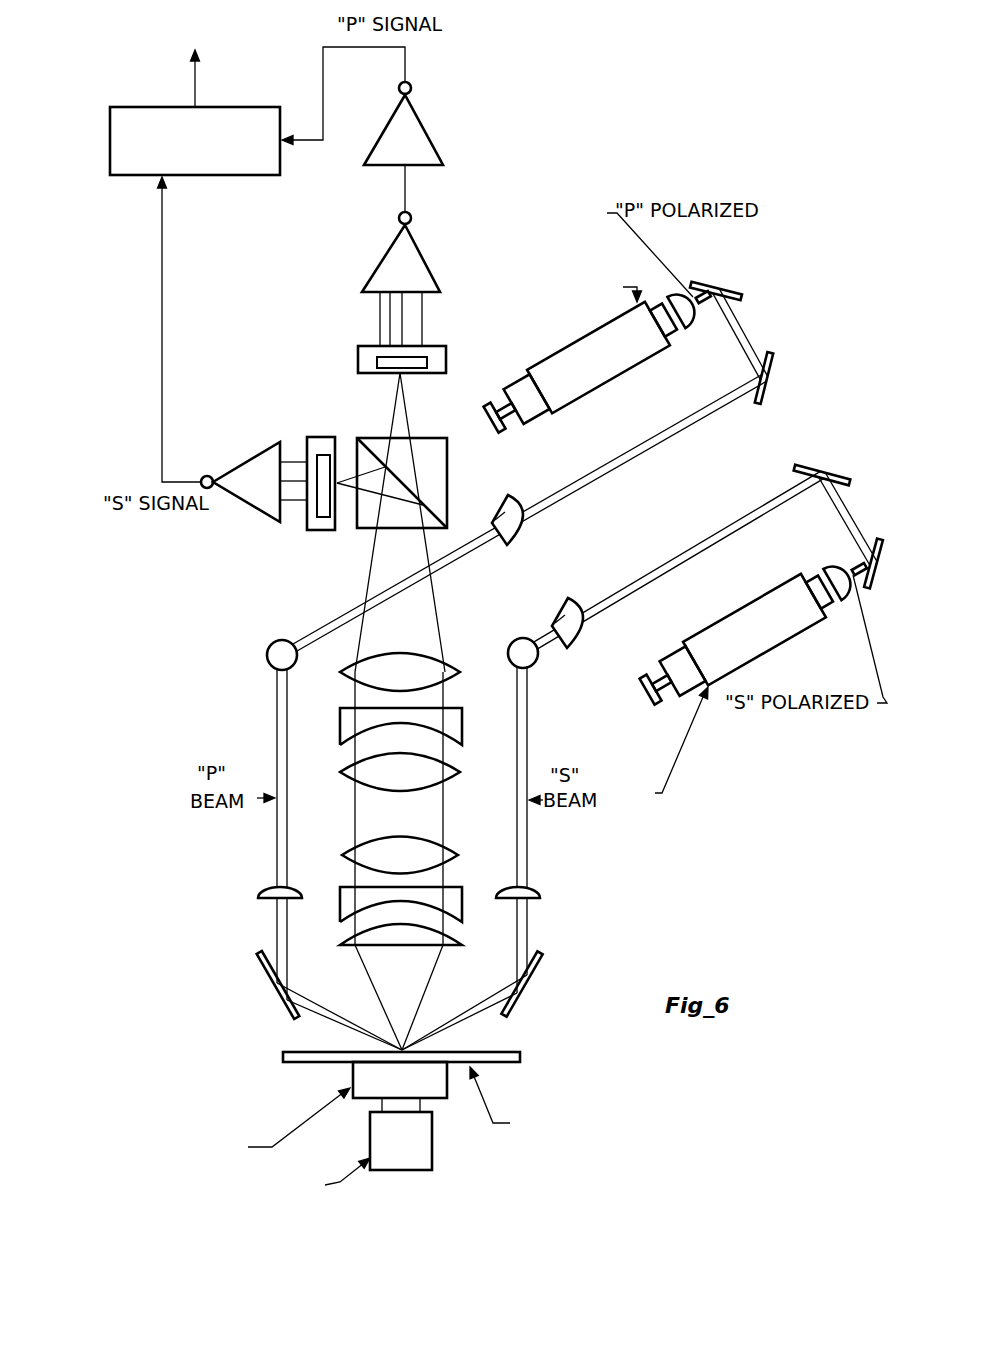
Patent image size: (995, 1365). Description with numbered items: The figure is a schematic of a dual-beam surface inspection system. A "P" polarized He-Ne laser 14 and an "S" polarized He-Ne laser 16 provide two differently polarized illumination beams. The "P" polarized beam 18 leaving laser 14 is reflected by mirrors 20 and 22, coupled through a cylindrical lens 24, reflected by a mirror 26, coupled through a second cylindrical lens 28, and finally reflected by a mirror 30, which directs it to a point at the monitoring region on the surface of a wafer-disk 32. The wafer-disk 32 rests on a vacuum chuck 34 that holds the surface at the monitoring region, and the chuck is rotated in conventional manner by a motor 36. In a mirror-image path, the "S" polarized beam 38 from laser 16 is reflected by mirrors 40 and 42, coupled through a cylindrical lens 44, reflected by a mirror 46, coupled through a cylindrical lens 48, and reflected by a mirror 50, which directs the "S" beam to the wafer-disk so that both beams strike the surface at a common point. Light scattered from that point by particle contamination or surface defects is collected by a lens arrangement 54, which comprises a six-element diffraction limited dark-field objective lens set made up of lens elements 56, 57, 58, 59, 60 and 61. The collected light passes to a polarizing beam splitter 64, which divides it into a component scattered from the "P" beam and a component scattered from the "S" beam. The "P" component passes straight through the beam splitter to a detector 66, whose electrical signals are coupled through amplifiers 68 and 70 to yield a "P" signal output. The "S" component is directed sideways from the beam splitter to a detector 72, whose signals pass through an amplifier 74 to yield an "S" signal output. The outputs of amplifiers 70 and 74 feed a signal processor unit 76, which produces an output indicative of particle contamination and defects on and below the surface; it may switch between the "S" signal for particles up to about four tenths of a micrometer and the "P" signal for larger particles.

The "P" polarized He-Ne laser 14 is at (628, 372).
The "S" polarized He-Ne laser 16 is at (740, 614).
The "P" polarized beam 18 is at (706, 310).
The mirror 20 is at (745, 292).
The mirror 22 is at (772, 380).
The cylindrical lens 24 is at (518, 528).
The mirror 26 is at (268, 655).
The cylindrical lens 28 is at (258, 896).
The mirror 30 is at (260, 968).
The wafer-disk 32 is at (283, 1057).
The vacuum chuck 34 is at (341, 1082).
The motor 36 is at (432, 1150).
The "S" polarized beam 38 is at (852, 567).
The mirror 40 is at (880, 538).
The mirror 42 is at (848, 466).
The cylindrical lens 44 is at (565, 595).
The mirror 46 is at (531, 666).
The cylindrical lens 48 is at (538, 896).
The mirror 50 is at (540, 972).
The lens arrangement 54 is at (463, 637).
The objective lens element 56 is at (340, 672).
The objective lens element 57 is at (460, 730).
The objective lens element 58 is at (340, 772).
The objective lens element 59 is at (490, 815).
The objective lens element 60 is at (340, 887).
The objective lens element 61 is at (484, 952).
The polarizing beam splitter 64 is at (358, 438).
The detector 66 is at (358, 355).
The amplifier 68 is at (422, 260).
The amplifier 70 is at (425, 130).
The detector 72 is at (310, 532).
The amplifier 74 is at (255, 512).
The signal processor unit 76 is at (218, 176).